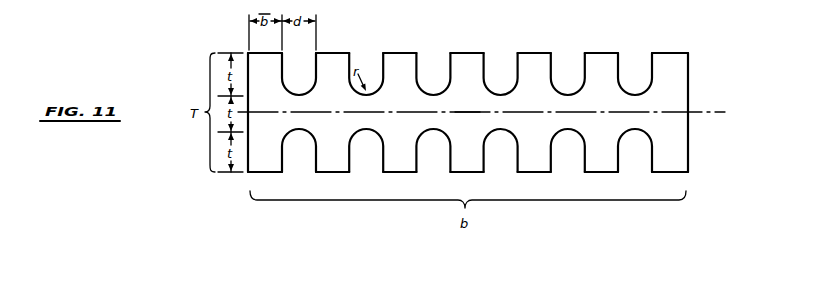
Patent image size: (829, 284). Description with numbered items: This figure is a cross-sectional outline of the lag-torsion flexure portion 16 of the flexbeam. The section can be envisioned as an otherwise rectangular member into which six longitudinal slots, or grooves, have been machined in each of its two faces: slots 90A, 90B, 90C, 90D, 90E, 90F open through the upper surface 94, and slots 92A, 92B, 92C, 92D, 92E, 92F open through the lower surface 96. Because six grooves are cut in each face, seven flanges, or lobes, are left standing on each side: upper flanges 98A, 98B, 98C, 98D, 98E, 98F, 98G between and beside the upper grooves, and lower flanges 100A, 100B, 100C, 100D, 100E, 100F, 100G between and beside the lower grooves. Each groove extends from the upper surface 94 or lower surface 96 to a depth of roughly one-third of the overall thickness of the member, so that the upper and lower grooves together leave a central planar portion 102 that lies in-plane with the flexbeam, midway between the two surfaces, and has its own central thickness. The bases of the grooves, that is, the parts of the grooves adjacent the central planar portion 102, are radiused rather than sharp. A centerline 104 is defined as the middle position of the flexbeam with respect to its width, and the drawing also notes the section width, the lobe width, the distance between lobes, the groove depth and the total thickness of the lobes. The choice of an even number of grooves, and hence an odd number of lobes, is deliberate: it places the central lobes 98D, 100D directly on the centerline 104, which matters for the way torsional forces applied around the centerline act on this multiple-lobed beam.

The lag-torsion flexure portion 16 is at (218, 48).
The upper surface 94 is at (688, 52).
The lower surface 96 is at (688, 174).
The flange 98A is at (261, 53).
The flange 98B is at (333, 52).
The flange 98C is at (400, 52).
The flange 98D is at (467, 52).
The flange 98E is at (535, 52).
The flange 98F is at (602, 52).
The flange 98G is at (671, 52).
The longitudinal slot 90A is at (298, 93).
The longitudinal slot 90B is at (376, 90).
The longitudinal slot 90C is at (433, 93).
The longitudinal slot 90D is at (500, 93).
The longitudinal slot 90E is at (567, 93).
The longitudinal slot 90F is at (634, 93).
The longitudinal slot 92A is at (299, 131).
The longitudinal slot 92B is at (366, 131).
The longitudinal slot 92C is at (433, 131).
The longitudinal slot 92D is at (500, 131).
The longitudinal slot 92E is at (567, 131).
The longitudinal slot 92F is at (634, 131).
The flange 100A is at (251, 175).
The flange 100B is at (318, 175).
The flange 100C is at (385, 175).
The flange 100D is at (453, 175).
The flange 100E is at (520, 175).
The flange 100F is at (587, 175).
The flange 100G is at (654, 175).
The central planar portion 102 is at (716, 108).
The centerline 104 is at (468, 119).